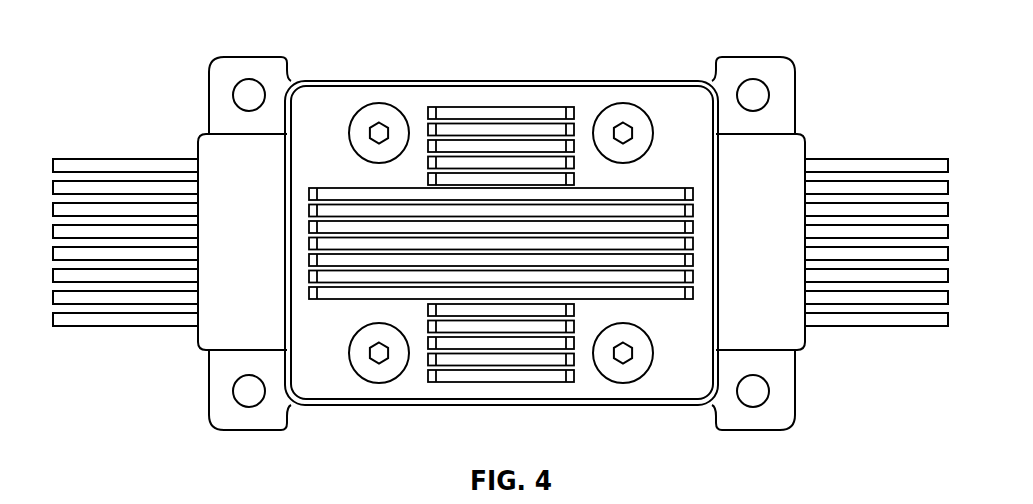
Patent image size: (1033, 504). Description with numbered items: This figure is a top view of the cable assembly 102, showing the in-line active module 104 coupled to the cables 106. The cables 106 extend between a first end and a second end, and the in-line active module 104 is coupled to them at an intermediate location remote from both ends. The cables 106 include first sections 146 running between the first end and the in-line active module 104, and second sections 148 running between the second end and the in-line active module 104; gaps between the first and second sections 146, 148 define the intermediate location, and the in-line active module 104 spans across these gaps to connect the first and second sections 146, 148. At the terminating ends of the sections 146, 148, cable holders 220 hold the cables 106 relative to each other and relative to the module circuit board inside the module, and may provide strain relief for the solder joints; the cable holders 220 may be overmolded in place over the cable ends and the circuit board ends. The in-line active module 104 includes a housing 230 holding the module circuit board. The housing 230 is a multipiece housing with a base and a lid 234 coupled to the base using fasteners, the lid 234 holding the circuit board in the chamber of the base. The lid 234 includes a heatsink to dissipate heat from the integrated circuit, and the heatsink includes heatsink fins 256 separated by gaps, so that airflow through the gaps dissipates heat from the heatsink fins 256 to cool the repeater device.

The cable assembly 102 is at (137, 62).
The in-line active module 104 is at (583, 53).
The cables 106 is at (108, 320).
The first sections 146 is at (93, 145).
The second sections 148 is at (903, 347).
The cable holders 220 is at (211, 152).
The housing 230 is at (389, 80).
The lid 234 is at (692, 118).
The heatsink fins 256 is at (488, 112).